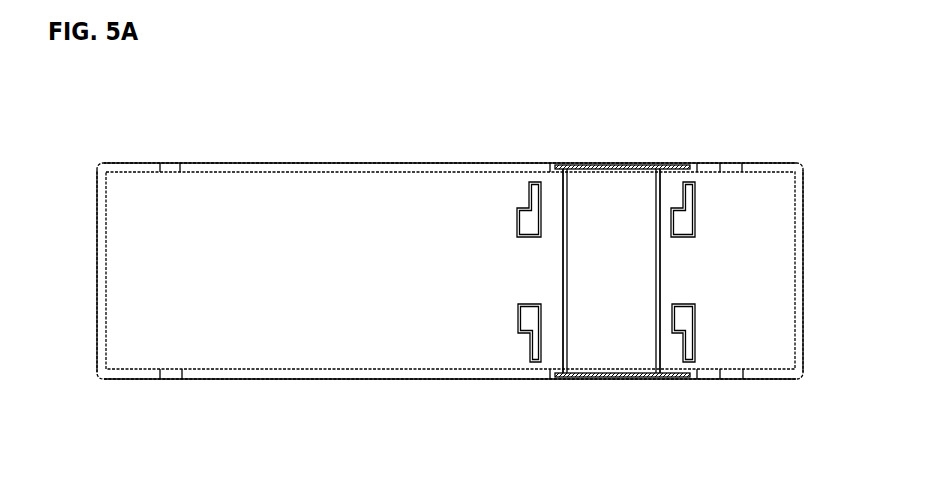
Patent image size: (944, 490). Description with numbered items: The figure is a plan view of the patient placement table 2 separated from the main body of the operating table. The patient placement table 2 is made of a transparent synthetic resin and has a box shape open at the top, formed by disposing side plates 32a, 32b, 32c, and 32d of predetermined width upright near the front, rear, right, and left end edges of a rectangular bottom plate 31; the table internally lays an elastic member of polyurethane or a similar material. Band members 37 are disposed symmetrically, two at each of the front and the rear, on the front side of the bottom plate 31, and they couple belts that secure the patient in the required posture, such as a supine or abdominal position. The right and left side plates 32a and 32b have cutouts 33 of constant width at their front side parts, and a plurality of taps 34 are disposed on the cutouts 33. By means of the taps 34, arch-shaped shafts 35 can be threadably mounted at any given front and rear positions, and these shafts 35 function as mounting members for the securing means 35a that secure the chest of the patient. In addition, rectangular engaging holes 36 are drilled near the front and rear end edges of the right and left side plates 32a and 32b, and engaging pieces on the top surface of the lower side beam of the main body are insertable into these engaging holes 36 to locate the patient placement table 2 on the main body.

The patient placement table 2 is at (662, 103).
The bottom plate 31 is at (307, 287).
The side plate 32a is at (365, 378).
The side plate 32b is at (417, 163).
The side plate 32c is at (803, 268).
The side plate 32d is at (97, 302).
The cutout 33 is at (635, 165).
The tap 34 is at (585, 165).
The arch-shaped shaft 35 is at (660, 265).
The securing means 35a is at (563, 265).
The engaging hole 36 is at (173, 163).
The band member 37 is at (529, 190).